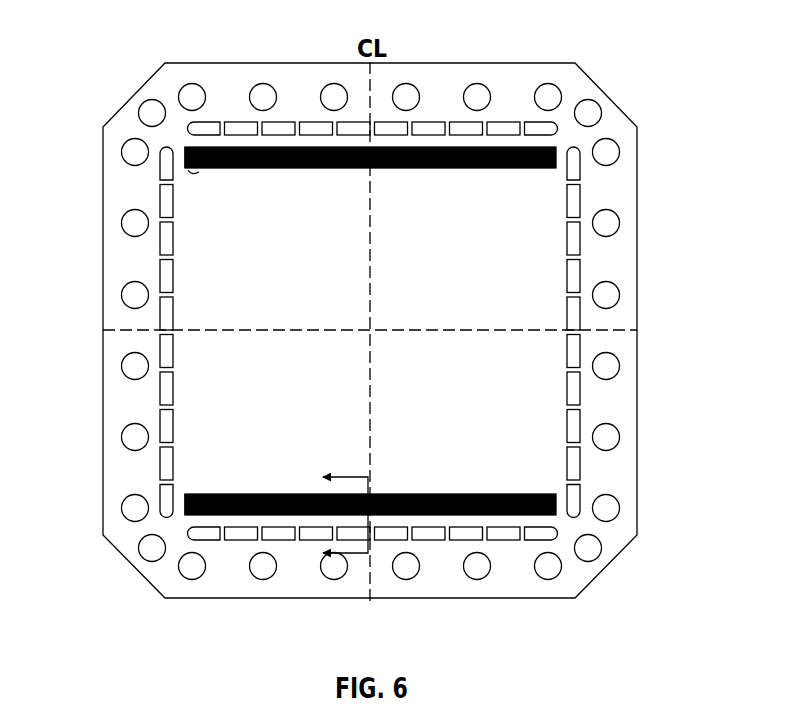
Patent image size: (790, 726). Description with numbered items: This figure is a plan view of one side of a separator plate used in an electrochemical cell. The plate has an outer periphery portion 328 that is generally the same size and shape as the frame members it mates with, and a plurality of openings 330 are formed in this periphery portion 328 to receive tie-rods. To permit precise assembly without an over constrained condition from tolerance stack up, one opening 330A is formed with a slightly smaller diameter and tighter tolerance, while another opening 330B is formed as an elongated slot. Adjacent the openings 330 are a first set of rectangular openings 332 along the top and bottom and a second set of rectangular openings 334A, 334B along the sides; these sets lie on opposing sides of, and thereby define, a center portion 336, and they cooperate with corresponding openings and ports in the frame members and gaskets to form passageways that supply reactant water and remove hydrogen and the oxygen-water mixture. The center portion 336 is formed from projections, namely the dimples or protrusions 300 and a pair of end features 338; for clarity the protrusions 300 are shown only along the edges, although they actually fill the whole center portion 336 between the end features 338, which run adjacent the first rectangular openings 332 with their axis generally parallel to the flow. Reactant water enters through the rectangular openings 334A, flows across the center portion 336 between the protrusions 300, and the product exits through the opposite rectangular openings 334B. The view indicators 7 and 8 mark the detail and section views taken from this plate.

The protrusions 300 is at (293, 172).
The outer periphery portion 328 is at (240, 82).
The openings 330 is at (478, 84).
The opening 330A is at (598, 104).
The opening 330B is at (142, 557).
The first set of rectangular openings 332 is at (224, 118).
The second set of rectangular openings 334A is at (157, 199).
The opposite rectangular openings 334B is at (587, 278).
The center portion 336 is at (328, 315).
The end features 338 is at (182, 143).
The detail view 7 indicator 7 is at (193, 173).
The section line 8- 8 is at (336, 516).